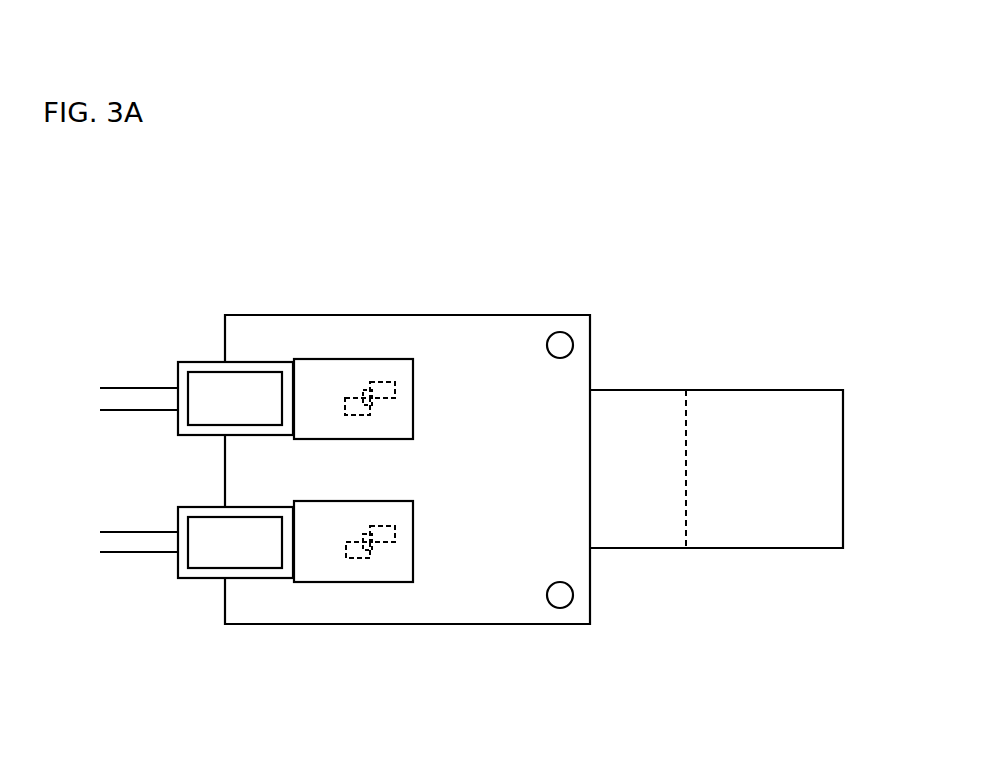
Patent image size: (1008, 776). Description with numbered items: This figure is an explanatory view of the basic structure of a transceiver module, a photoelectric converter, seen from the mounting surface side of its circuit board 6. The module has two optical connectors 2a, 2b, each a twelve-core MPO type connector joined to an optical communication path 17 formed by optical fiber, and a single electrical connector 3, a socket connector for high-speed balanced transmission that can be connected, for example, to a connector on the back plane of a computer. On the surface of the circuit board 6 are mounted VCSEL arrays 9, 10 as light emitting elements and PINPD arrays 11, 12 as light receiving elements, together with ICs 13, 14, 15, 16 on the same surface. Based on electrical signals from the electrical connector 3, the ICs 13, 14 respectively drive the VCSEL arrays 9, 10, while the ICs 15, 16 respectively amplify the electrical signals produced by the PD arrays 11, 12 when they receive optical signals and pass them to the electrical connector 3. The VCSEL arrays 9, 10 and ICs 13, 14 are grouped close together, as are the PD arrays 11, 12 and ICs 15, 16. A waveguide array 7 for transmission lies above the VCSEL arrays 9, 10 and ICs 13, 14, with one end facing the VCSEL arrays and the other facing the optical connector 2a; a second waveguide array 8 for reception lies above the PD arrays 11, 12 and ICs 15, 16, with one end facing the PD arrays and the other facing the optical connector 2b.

The optical connector 2a is at (218, 380).
The optical connector 2b is at (212, 550).
The electrical connector 3 is at (715, 525).
The circuit board 6 is at (538, 325).
The waveguide array 7 is at (306, 380).
The waveguide array 8 is at (306, 565).
The VCSEL array 9 is at (370, 384).
The VCSEL array 10 is at (372, 410).
The PINPD array 11 is at (357, 532).
The PINPD array 12 is at (362, 558).
The IC 13 is at (390, 383).
The IC 14 is at (345, 400).
The IC 15 is at (395, 543).
The IC 16 is at (350, 558).
The optical communication path 17 is at (138, 400).